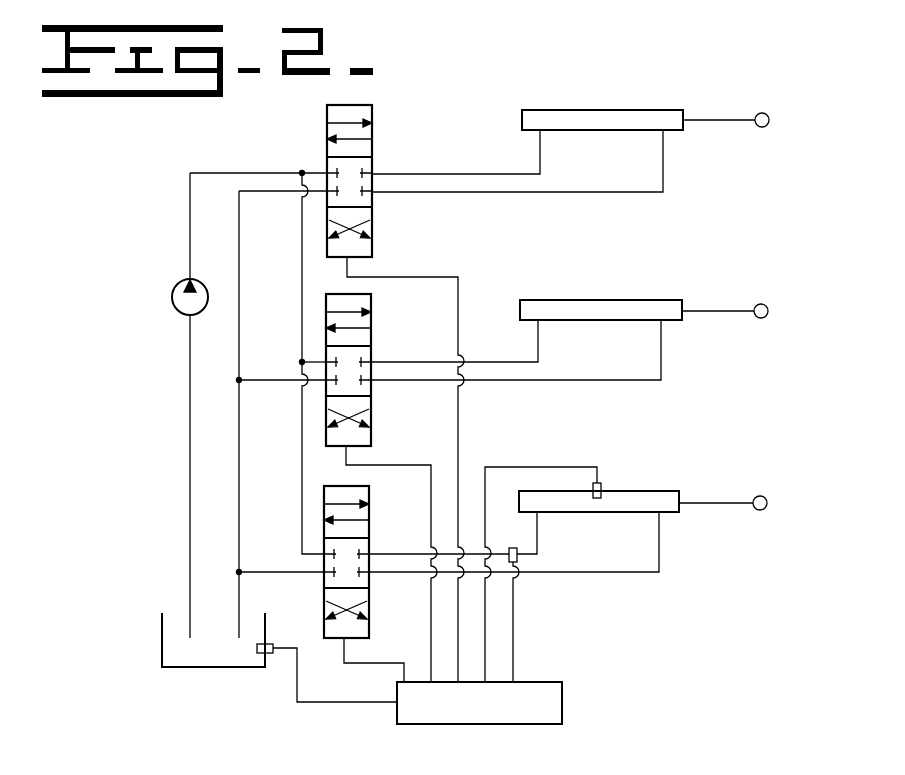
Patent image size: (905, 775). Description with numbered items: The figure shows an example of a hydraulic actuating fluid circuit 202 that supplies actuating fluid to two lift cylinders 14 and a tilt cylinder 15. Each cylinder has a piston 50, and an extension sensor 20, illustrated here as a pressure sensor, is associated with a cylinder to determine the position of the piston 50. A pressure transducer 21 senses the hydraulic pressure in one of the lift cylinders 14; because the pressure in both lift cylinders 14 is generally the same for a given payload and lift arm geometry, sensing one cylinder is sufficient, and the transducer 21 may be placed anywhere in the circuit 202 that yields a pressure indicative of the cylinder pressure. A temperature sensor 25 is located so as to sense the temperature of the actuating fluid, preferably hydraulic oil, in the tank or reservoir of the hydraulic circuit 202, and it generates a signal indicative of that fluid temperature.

The actuating fluid circuit 202 is at (97, 172).
The tilt cylinder 15 is at (600, 110).
The lift cylinder 14 is at (608, 300).
The piston 50 is at (726, 120).
The extension sensor 20 is at (601, 487).
The pressure transducer 21 is at (520, 561).
The temperature sensor 25 is at (270, 653).